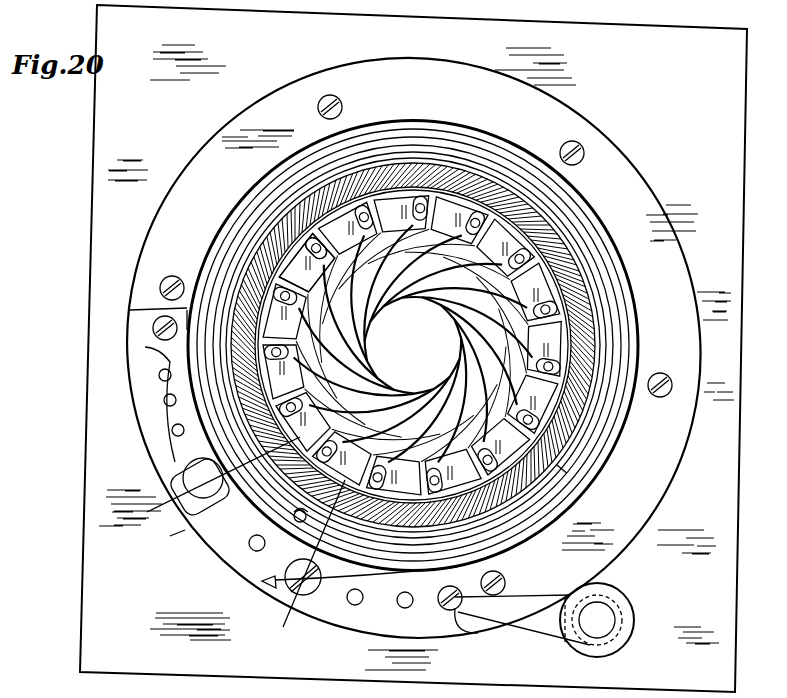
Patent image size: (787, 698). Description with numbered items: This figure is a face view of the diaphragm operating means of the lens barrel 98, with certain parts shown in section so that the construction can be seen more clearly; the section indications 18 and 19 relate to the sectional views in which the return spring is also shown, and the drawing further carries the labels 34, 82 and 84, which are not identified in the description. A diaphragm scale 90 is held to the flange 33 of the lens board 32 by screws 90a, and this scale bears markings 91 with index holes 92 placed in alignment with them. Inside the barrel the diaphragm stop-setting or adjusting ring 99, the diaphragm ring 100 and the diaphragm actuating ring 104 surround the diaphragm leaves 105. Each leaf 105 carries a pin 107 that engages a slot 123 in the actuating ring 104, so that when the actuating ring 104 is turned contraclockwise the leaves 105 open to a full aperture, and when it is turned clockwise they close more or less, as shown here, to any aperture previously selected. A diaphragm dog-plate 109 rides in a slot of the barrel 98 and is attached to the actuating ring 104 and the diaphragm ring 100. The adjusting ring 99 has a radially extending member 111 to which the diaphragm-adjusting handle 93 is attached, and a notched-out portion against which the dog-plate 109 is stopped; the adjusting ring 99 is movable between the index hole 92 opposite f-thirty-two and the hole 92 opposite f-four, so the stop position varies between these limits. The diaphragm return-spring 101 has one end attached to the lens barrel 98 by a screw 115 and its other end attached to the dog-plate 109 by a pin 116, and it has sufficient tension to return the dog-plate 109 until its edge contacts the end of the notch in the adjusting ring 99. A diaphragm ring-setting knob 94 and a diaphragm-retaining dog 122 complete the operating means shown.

The section line 18- 18 is at (230, 471).
The section line 19- 19 is at (312, 556).
The lens board 32 is at (733, 50).
The flange 33 is at (668, 245).
The screws 34 is at (340, 100).
The lever knob 82 is at (627, 643).
The lever arm 84 is at (555, 630).
The diaphragm scale 90 is at (233, 548).
The screws 90a is at (153, 323).
The markings 91 is at (163, 440).
The index holes 92 is at (145, 347).
The diaphragm-adjusting handle 93 is at (187, 476).
The diaphragm ring-setting knob 94 is at (303, 595).
The lens barrel 98 is at (477, 180).
The diaphragm stop-setting or adjusting ring 99 is at (257, 208).
The diaphragm ring 100 is at (618, 283).
The diaphragm return-spring 101 is at (613, 363).
The diaphragm actuating ring 104 is at (540, 273).
The diaphragm leaves 105 is at (482, 292).
The pin 107 is at (425, 209).
The diaphragm dog-plate 109 is at (332, 588).
The radially extending member 111 is at (171, 543).
The screw 115 is at (563, 470).
The pin 116 is at (317, 535).
The diaphragm-retaining dog 122 is at (265, 590).
The slots 123 is at (318, 273).